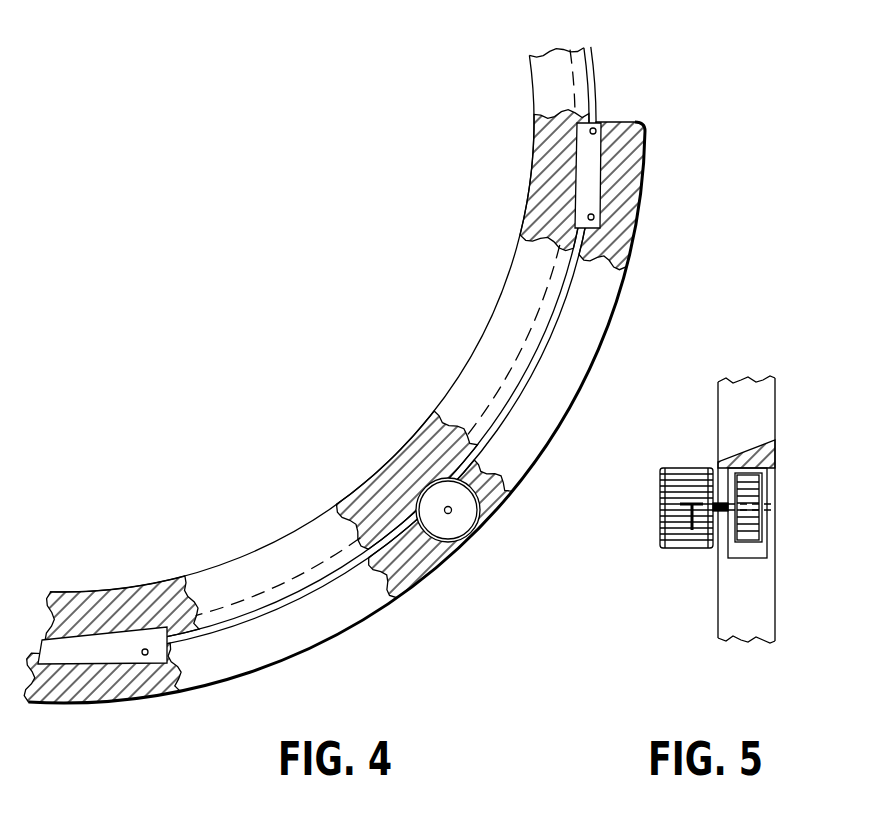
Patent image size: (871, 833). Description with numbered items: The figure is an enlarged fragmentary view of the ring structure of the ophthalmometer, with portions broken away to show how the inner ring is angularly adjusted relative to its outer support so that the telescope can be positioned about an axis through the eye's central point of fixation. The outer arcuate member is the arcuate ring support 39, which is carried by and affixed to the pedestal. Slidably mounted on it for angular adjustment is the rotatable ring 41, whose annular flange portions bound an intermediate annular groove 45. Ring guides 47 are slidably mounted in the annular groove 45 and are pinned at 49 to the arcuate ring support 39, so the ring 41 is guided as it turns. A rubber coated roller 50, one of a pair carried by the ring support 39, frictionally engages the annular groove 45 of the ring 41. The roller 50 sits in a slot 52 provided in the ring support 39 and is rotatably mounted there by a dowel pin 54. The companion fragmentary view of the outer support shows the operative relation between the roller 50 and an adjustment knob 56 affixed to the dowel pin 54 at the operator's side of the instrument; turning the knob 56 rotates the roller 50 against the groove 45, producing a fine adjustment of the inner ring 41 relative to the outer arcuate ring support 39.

In FIG. 4, the arcuate ring support 39 is at (555, 422).
In FIG. 5, the arcuate ring support 39 is at (767, 597).
In FIG. 4, the rotatable ring 41 is at (493, 310).
In FIG. 4, the annular groove 45 is at (563, 243).
In FIG. 4, the ring guide 47 is at (592, 184).
In FIG. 4, the pin 49 is at (595, 128).
In FIG. 4, the rubber coated roller 50 is at (463, 527).
In FIG. 5, the rubber coated roller 50 is at (757, 497).
In FIG. 4, the slot 52 is at (447, 547).
In FIG. 5, the slot 52 is at (735, 553).
In FIG. 4, the dowel pin 54 is at (452, 510).
In FIG. 5, the dowel pin 54 is at (728, 505).
In FIG. 5, the adjustment knob 56 is at (673, 477).